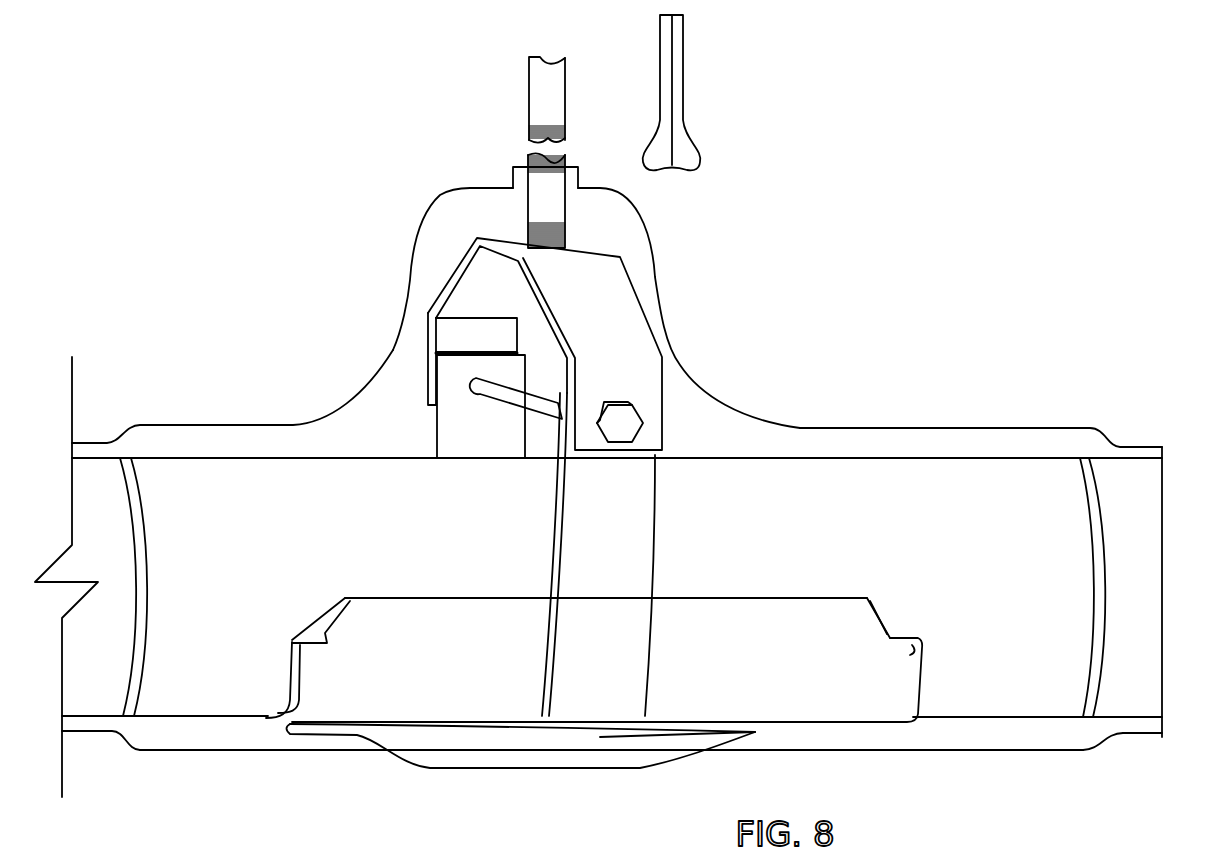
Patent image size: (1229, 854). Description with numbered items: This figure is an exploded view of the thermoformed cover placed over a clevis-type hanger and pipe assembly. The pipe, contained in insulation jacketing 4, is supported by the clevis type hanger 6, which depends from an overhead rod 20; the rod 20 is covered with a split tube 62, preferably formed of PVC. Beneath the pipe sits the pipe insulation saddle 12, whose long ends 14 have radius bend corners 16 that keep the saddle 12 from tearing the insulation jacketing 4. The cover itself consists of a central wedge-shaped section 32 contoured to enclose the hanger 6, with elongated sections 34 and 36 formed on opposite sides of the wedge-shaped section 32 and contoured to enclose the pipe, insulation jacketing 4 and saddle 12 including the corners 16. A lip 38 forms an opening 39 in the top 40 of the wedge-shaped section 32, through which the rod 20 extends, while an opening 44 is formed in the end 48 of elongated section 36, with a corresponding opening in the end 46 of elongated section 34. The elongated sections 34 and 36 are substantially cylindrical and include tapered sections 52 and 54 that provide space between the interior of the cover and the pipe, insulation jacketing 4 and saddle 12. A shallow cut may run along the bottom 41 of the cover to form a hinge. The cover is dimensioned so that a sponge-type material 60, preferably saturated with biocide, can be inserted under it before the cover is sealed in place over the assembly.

The insulation jacketing 4 is at (993, 705).
The clevis type hanger 6 is at (590, 717).
The pipe insulation saddle 12 is at (697, 705).
The long ends 14 is at (288, 716).
The bend corners 16 is at (313, 643).
The rod 20 is at (568, 130).
The central wedge-shaped section 32 is at (545, 770).
The elongated section 34 is at (243, 425).
The elongated section 36 is at (963, 428).
The lip 38 is at (518, 168).
The opening 39 is at (528, 160).
The top 40 is at (452, 190).
The bottom 41 is at (1037, 752).
The opening 44 is at (1162, 660).
The end 46 is at (80, 733).
The end 48 is at (1140, 733).
The tapered section 52 is at (120, 747).
The tapered section 54 is at (1112, 740).
The material 60 is at (441, 745).
The split tube 62 is at (688, 128).